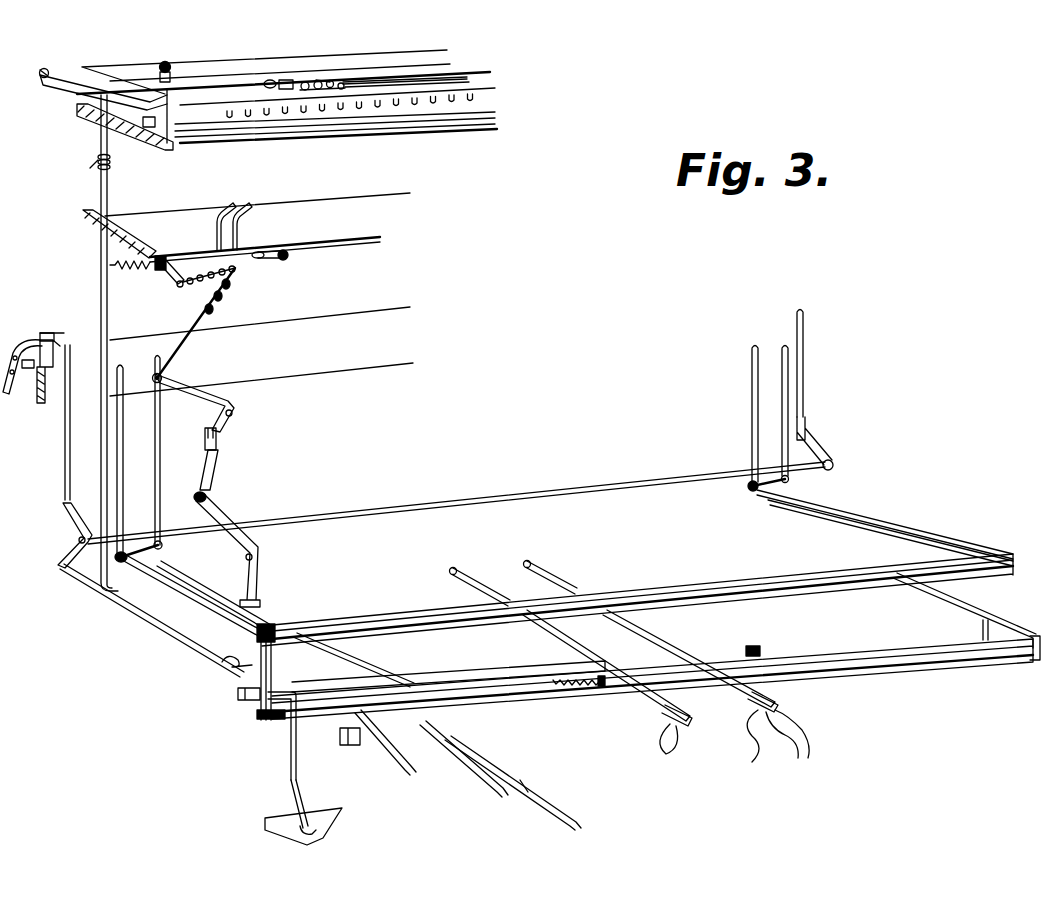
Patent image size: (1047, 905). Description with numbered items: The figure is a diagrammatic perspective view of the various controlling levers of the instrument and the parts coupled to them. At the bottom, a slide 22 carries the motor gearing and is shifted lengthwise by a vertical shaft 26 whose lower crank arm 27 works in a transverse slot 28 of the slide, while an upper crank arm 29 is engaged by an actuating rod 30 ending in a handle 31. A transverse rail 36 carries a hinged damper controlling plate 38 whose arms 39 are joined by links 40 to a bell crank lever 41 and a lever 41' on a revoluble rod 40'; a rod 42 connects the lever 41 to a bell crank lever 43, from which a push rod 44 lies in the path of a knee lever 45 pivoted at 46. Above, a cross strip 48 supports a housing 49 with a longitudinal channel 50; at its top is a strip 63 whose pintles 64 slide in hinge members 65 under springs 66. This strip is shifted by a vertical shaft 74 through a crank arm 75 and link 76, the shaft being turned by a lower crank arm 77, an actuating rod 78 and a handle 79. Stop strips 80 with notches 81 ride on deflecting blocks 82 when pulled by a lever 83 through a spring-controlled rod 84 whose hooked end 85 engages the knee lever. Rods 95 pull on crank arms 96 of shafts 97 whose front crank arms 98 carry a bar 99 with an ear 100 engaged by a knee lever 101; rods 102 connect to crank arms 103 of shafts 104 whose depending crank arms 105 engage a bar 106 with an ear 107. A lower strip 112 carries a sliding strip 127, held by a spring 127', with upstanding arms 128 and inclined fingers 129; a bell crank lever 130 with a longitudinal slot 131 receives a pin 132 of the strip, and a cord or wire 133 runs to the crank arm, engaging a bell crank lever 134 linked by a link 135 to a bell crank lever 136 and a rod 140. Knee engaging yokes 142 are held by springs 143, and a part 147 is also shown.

The slide 22 is at (265, 824).
The vertical shaft 26 is at (291, 775).
The crank arm 27 is at (293, 803).
The transverse slot 28 is at (318, 835).
The crank arm 29 is at (250, 653).
The actuating rod 30 is at (420, 748).
The handle 31 is at (505, 797).
The transverse rail 36 is at (306, 368).
The damper controlling plate 38 is at (24, 385).
The arms 39 is at (47, 333).
The links 40 is at (437, 405).
The revoluble rod 40' is at (456, 502).
The bell crank lever 41 is at (57, 535).
The lever 41' is at (834, 443).
The rod 42 is at (82, 580).
The bell crank lever 43 is at (245, 700).
The push rod 44 is at (450, 672).
The knee lever 45 is at (555, 644).
The pivot 46 is at (460, 571).
The cross strip 48 is at (200, 147).
The housing 49 is at (125, 112).
The longitudinal channel 50 is at (147, 128).
The strip 63 is at (161, 66).
The pintles 64 is at (306, 92).
The hinge members 65 is at (283, 92).
The springs 66 is at (322, 78).
The vertical shaft 74 is at (104, 190).
The crank arm 75 is at (58, 97).
The link 76 is at (62, 62).
The crank arm 77 is at (115, 592).
The actuating rod 78 is at (355, 660).
The handle 79 is at (528, 788).
The stop strips 80 is at (742, 576).
The notches 81 is at (560, 592).
The deflecting blocks 82 is at (725, 598).
The lever 83 is at (262, 712).
The spring-controlled rod 84 is at (505, 693).
The hooked end 85 is at (650, 690).
The rod 95 is at (753, 380).
The crank arm 96 is at (752, 492).
The shaft 97 is at (880, 540).
The crank arm 98 is at (351, 746).
The bar 99 is at (977, 668).
The ear 100 is at (780, 690).
The knee lever 101 is at (713, 665).
The rod 102 is at (789, 396).
The crank arm 103 is at (793, 486).
The shaft 104 is at (935, 606).
The crank arms 105 is at (983, 632).
The bar 106 is at (862, 656).
The ear 107 is at (743, 667).
The lower strip 112 is at (84, 225).
The strip 127 is at (265, 263).
The spring 127' is at (99, 268).
The upstanding arms 128 is at (199, 237).
The inclined fingers 129 is at (240, 205).
The bell crank lever 130 is at (180, 290).
The longitudinal slot 131 is at (168, 272).
The pin 132 is at (162, 256).
The cord or wire 133 is at (200, 335).
The bell crank lever 134 is at (230, 403).
The link 135 is at (220, 460).
The bell crank lever 136 is at (235, 515).
The rod 140 is at (272, 624).
The knee engaging yoke 142 is at (758, 740).
The springs 143 is at (660, 728).
The tube end 147 is at (582, 822).